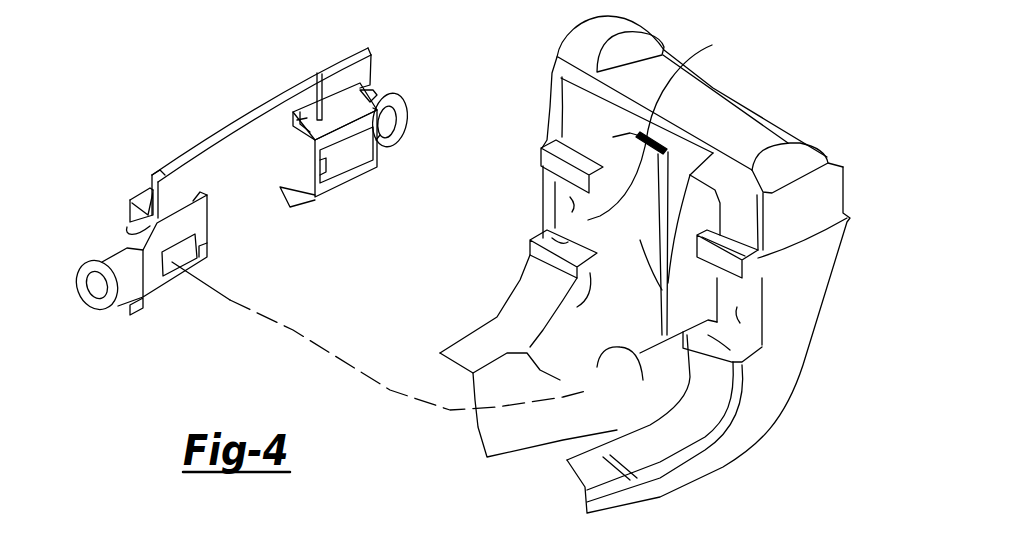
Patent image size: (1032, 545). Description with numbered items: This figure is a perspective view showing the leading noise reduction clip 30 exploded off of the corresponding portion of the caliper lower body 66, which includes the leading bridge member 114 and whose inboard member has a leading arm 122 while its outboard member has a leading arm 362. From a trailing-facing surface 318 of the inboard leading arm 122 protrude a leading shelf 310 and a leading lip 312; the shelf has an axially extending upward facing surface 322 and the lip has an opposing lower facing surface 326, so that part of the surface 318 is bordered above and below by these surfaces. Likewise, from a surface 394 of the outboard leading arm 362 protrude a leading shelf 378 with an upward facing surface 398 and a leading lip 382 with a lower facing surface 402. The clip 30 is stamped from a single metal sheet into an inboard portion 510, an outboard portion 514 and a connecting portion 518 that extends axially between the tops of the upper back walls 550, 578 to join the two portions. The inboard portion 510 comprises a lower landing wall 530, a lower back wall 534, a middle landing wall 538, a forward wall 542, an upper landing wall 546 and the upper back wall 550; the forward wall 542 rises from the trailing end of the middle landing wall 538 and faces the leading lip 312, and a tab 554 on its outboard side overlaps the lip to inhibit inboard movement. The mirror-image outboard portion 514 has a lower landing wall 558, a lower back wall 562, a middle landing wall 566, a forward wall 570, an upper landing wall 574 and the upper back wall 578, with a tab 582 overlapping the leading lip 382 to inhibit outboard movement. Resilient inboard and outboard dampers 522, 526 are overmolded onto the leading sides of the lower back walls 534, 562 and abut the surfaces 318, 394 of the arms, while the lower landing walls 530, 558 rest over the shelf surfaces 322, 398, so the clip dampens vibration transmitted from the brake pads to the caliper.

The leading noise reduction clip 30 is at (207, 119).
The connecting portion 518 is at (243, 112).
The middle landing wall 538 is at (348, 110).
The upper landing wall 546 is at (312, 92).
The forward wall 542 is at (292, 115).
The upper back wall 550 is at (373, 88).
The inboard damper 522 is at (405, 121).
The inboard portion 510 is at (328, 208).
The lower back wall 534 is at (365, 186).
The lower landing wall 530 is at (286, 200).
The tab 554 is at (292, 128).
The outboard portion 514 is at (158, 294).
The lower back wall 562 is at (208, 250).
The tab 582 is at (208, 210).
The upper back wall 578 is at (160, 165).
The upper landing wall 574 is at (140, 192).
The forward wall 570 is at (130, 212).
The middle landing wall 566 is at (127, 230).
The outboard damper 526 is at (135, 260).
The lower landing wall 558 is at (128, 308).
The lower body 66 is at (757, 436).
The leading bridge member 114 is at (758, 145).
The lower facing surface 326 is at (705, 140).
The leading lip 312 is at (666, 182).
The surface 318 is at (570, 198).
The upward facing surface 322 is at (535, 240).
The leading shelf 310 is at (563, 308).
The leading arm 122 is at (664, 295).
The leading lip 382 is at (765, 262).
The lower facing surface 402 is at (762, 288).
The leading arm 362 is at (805, 294).
The surface 394 is at (743, 310).
The upward facing surface 398 is at (757, 342).
The leading shelf 378 is at (750, 373).